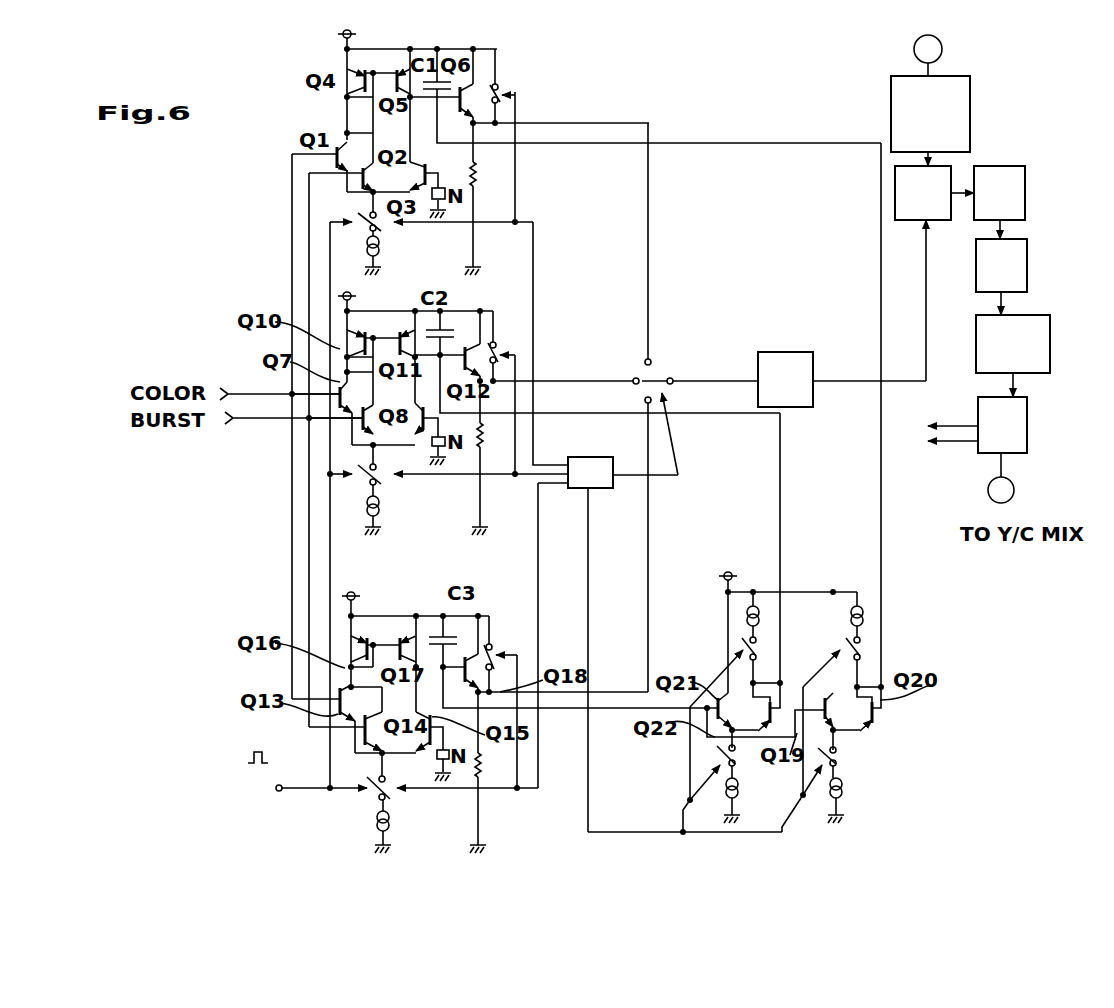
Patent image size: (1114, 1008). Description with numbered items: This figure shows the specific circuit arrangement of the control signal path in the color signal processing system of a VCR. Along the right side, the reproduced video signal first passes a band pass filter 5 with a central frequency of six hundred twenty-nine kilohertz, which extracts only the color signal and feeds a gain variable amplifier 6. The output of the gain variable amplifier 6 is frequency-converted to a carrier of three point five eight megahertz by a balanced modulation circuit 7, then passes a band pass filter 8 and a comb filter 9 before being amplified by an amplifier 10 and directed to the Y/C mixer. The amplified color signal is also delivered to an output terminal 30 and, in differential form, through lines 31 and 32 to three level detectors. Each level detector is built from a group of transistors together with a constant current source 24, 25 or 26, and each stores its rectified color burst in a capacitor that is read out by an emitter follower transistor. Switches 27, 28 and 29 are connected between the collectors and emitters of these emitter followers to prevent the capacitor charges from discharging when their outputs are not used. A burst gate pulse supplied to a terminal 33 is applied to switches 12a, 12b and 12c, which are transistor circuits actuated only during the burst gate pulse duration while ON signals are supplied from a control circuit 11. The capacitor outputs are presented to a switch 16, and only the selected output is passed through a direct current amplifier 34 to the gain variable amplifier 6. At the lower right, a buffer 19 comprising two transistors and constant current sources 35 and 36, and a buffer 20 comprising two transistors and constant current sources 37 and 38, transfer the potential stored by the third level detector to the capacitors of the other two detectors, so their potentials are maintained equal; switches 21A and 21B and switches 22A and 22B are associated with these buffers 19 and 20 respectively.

The band pass filter 5 is at (970, 82).
The gain variable amplifier 6 is at (895, 203).
The balanced modulation circuit 7 is at (1025, 172).
The band pass filter 8 is at (1027, 248).
The comb filter 9 is at (1050, 322).
The amplifier 10 is at (1027, 406).
The control circuit 11 is at (598, 457).
The switch 12a is at (383, 229).
The switch 12b is at (381, 483).
The switch 12c is at (392, 797).
The switch 16 is at (657, 370).
The buffer 19 is at (875, 728).
The buffer 20 is at (722, 672).
The switch 21A is at (848, 763).
The switch 21B is at (880, 658).
The switch 22A is at (717, 756).
The switch 22B is at (760, 647).
The constant current source 24 is at (362, 249).
The constant current source 25 is at (380, 513).
The constant current source 26 is at (378, 822).
The switch 27 is at (500, 88).
The switch 28 is at (497, 342).
The switch 29 is at (491, 645).
The output terminal 30 is at (1015, 482).
The line 31 is at (247, 393).
The line 32 is at (258, 421).
The terminal 33 is at (285, 795).
The direct current amplifier 34 is at (785, 352).
The constant current source 35 is at (845, 787).
The constant current source 36 is at (870, 610).
The constant current source 37 is at (740, 786).
The constant current source 38 is at (745, 614).